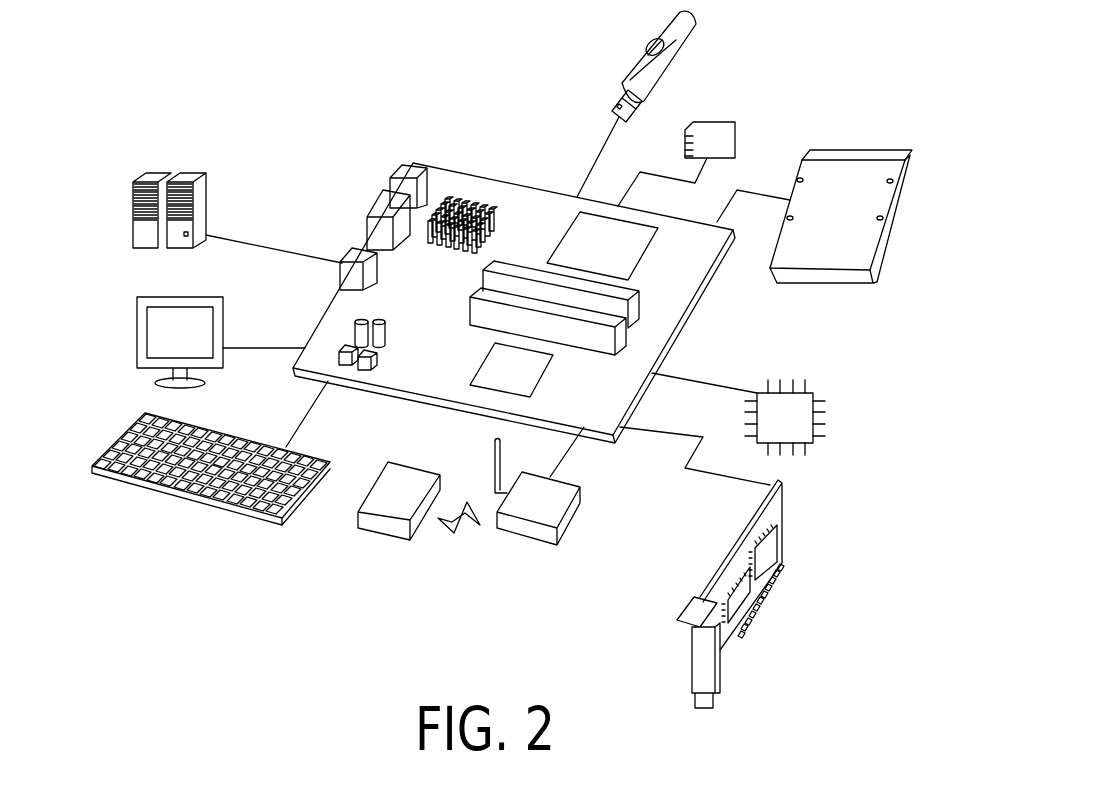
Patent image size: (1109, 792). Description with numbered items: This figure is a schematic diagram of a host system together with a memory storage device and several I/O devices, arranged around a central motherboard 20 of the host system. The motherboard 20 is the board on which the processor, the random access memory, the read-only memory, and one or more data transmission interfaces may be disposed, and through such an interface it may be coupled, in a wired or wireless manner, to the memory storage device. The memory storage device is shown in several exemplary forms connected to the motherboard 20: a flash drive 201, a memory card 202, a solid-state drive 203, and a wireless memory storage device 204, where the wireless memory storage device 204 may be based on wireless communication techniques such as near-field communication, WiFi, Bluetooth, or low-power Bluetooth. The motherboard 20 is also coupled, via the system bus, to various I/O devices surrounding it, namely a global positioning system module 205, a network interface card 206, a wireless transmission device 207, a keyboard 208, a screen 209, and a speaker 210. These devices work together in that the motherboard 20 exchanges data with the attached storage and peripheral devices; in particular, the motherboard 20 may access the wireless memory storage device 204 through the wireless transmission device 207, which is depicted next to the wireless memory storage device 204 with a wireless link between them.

The motherboard 20 is at (517, 203).
The flash drive 201 is at (640, 58).
The memory card 202 is at (738, 130).
The solid-state drive (SSD) 203 is at (858, 148).
The wireless memory storage device 204 is at (377, 478).
The global positioning system (GPS) module 205 is at (818, 417).
The network interface card 206 is at (783, 538).
The wireless transmission device 207 is at (575, 523).
The keyboard 208 is at (215, 505).
The screen 209 is at (137, 350).
The speaker 210 is at (133, 236).